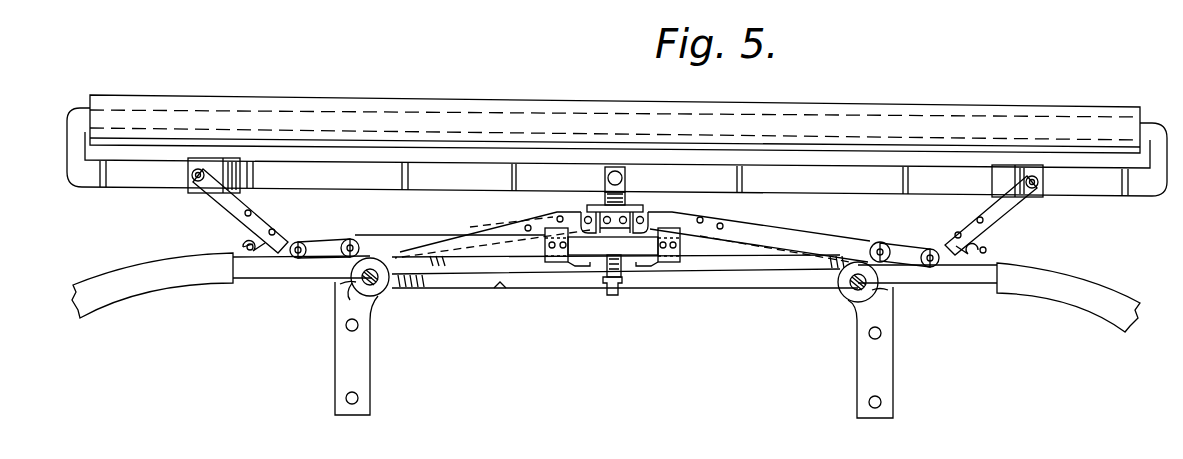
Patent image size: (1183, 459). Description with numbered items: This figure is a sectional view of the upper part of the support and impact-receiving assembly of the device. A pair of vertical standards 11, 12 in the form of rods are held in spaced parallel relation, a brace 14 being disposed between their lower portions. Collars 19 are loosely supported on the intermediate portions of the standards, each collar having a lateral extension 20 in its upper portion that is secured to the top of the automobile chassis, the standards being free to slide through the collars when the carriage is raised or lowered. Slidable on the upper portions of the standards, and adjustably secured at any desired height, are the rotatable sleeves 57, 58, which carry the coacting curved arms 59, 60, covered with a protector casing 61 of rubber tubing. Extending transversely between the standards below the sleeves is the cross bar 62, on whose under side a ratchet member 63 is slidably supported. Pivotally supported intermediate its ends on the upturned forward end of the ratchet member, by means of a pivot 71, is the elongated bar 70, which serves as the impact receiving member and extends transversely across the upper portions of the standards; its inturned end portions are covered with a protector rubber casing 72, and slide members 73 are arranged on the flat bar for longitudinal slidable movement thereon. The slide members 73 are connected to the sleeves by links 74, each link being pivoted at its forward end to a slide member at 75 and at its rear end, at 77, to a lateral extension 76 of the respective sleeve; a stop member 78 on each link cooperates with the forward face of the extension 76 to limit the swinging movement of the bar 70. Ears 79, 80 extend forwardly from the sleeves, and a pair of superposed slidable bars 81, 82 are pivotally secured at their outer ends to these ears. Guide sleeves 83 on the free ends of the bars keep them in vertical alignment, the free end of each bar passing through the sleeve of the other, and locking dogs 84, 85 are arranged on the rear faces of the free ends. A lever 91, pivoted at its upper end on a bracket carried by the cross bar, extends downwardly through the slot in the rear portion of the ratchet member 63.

The vertical standard 11 is at (377, 306).
The vertical standard 12 is at (848, 302).
The lower brace 14 is at (731, 289).
The collar 19 is at (393, 291).
The lateral extension 20 is at (358, 375).
The sleeve 57 is at (349, 283).
The sleeve 58 is at (884, 303).
The curved arm 59 is at (270, 272).
The curved arm 60 is at (980, 287).
The protector casing 61 is at (178, 290).
The cross bar 62 is at (700, 240).
The ratchet member 63 is at (613, 297).
The elongated bar 70 is at (456, 177).
The pivot 71 is at (622, 178).
The bar 72 is at (458, 105).
The bracket 73 is at (205, 162).
The link 74 is at (235, 212).
The pivotal connection 75 is at (192, 195).
The lateral extension 76 is at (322, 248).
The pivotal connection 77 is at (302, 242).
The stop member 78 is at (272, 240).
The ear 79 is at (362, 243).
The ear 80 is at (890, 248).
The slidable bar 81 is at (505, 228).
The slidable bar 82 is at (792, 241).
The guide sleeve 83 is at (548, 264).
The locking dog 84 is at (575, 264).
The locking dog 85 is at (642, 275).
The lever 91 is at (607, 285).